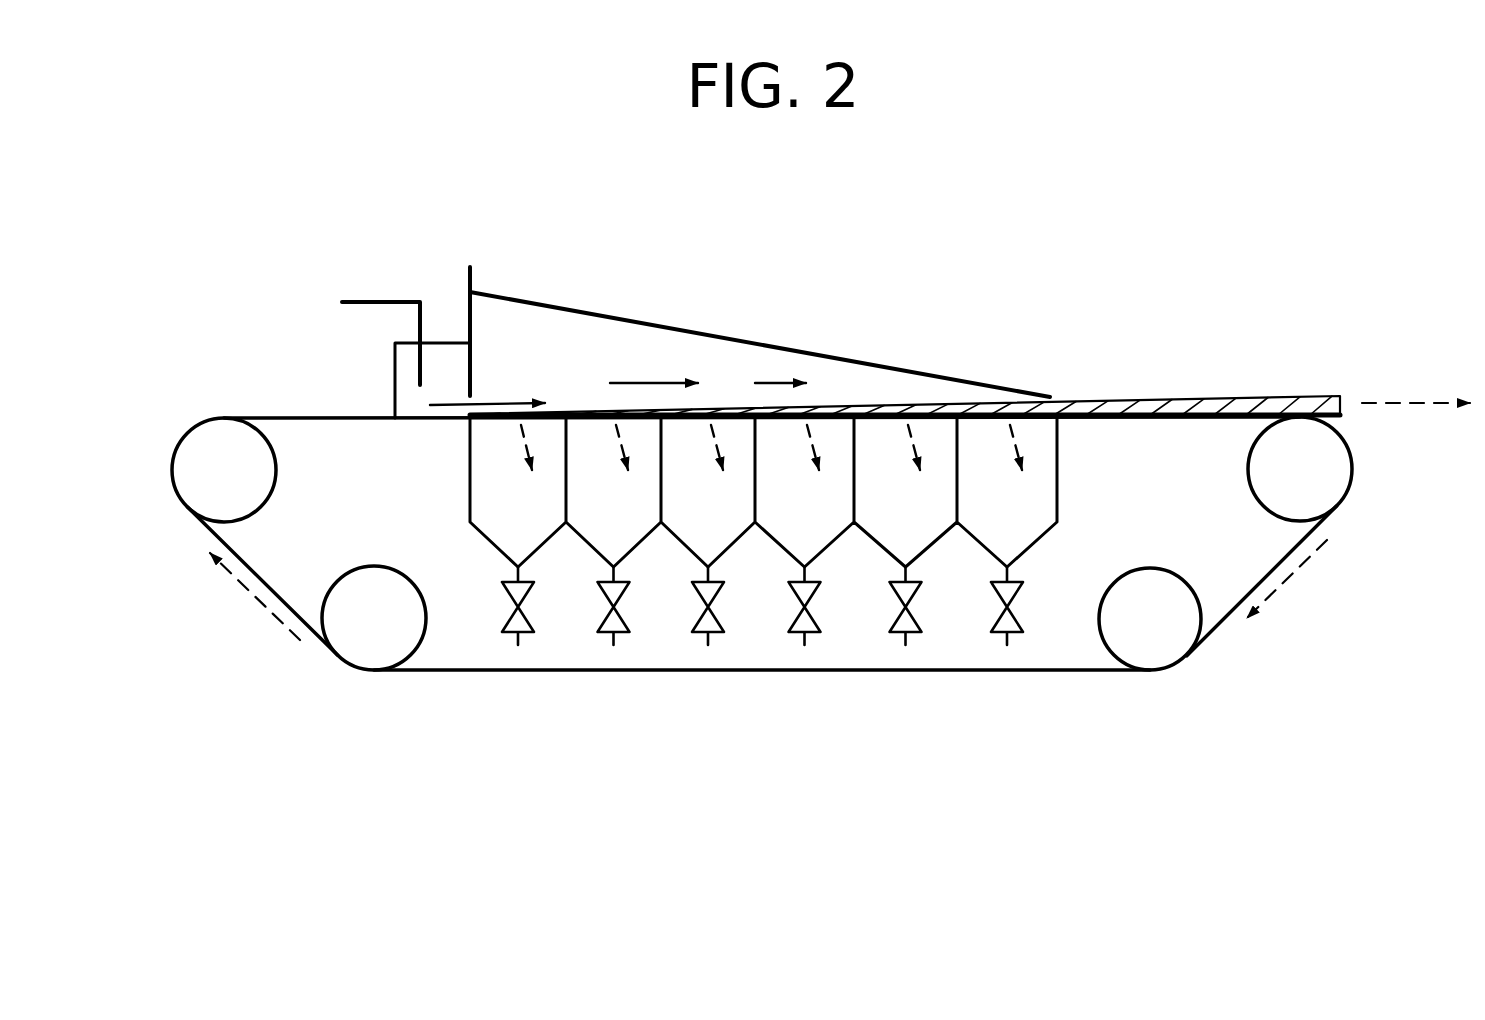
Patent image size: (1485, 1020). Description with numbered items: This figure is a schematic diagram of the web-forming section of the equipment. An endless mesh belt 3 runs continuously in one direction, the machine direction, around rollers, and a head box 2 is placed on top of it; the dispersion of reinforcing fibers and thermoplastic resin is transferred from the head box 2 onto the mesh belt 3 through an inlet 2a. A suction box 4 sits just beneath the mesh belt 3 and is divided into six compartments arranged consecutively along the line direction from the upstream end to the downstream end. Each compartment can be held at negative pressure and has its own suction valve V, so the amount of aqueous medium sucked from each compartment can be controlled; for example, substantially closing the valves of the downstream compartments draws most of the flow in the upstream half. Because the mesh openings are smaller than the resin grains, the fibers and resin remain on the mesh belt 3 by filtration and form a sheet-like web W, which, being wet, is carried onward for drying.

The head box 2 is at (908, 367).
The inlet 2a is at (401, 379).
The mesh belt 3 is at (298, 617).
The suction box 4 is at (472, 473).
The web W is at (1212, 397).
The suction valve V is at (1014, 612).